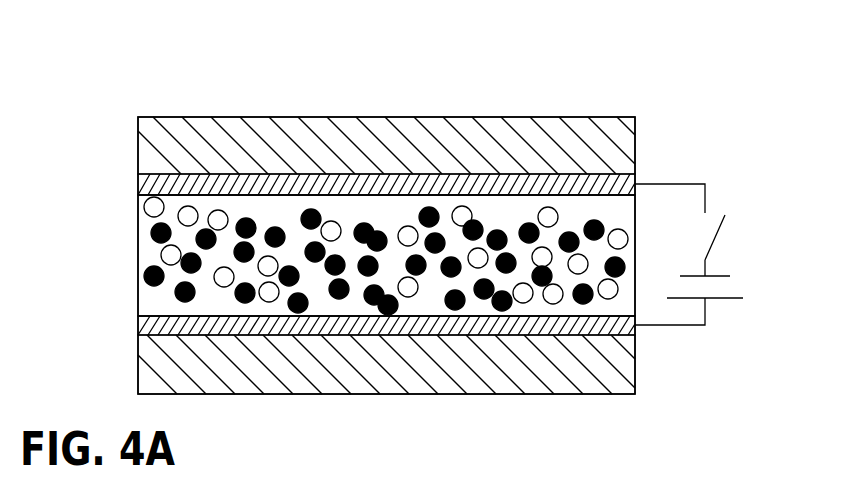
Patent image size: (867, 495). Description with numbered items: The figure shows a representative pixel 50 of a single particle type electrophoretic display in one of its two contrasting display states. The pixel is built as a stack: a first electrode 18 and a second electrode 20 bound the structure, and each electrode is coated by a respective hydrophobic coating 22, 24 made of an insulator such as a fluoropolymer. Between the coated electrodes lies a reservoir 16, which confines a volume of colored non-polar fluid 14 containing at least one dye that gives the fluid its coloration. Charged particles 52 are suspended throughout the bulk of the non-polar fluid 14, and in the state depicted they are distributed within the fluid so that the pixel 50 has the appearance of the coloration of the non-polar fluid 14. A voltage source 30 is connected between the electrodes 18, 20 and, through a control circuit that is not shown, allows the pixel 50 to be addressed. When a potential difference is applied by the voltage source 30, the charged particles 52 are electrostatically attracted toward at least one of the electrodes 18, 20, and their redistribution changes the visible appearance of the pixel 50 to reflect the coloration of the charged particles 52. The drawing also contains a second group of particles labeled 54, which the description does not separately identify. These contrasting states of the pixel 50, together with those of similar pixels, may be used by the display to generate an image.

The pixel 50 is at (100, 66).
The second electrode 20 is at (138, 130).
The hydrophobic coating 24 is at (138, 183).
The reservoir 16 is at (134, 242).
The non-polar fluid 14 is at (138, 288).
The hydrophobic coating 22 is at (138, 328).
The first electrode 18 is at (138, 357).
The charged particles 52 is at (547, 207).
The second type charged particles 54 is at (571, 232).
The voltage source 30 is at (717, 302).